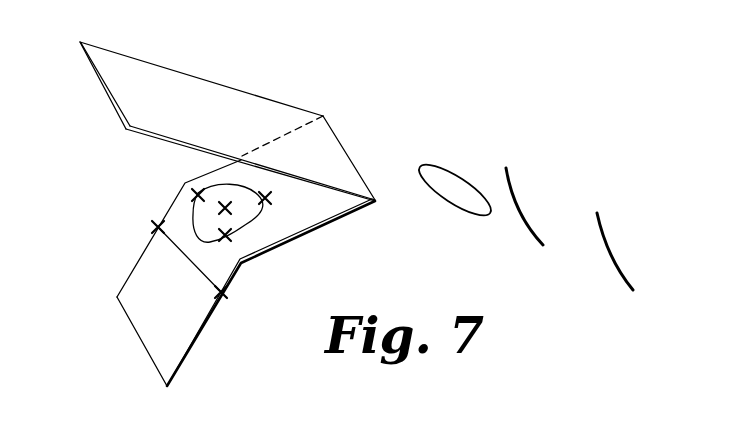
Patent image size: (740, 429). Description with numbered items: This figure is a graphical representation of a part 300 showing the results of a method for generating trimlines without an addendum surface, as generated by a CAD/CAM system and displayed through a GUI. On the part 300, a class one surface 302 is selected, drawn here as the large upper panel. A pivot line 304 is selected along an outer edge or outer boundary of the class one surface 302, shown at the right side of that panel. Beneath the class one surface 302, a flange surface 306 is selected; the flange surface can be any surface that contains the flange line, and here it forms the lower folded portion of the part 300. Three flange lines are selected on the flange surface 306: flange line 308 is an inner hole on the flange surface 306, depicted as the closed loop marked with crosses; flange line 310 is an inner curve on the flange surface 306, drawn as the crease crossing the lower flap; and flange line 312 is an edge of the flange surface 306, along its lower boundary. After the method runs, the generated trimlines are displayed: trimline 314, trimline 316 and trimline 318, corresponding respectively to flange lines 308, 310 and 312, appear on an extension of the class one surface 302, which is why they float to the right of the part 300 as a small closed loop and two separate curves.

The part 300 is at (163, 78).
The class one surface 302 is at (242, 88).
The pivot line 304 is at (340, 138).
The flange surface 306 is at (302, 238).
The flange line 308 is at (192, 211).
The flange line 310 is at (178, 254).
The flange line 312 is at (138, 338).
The trimline 314 is at (463, 172).
The trimline 316 is at (509, 182).
The trimline 318 is at (602, 230).